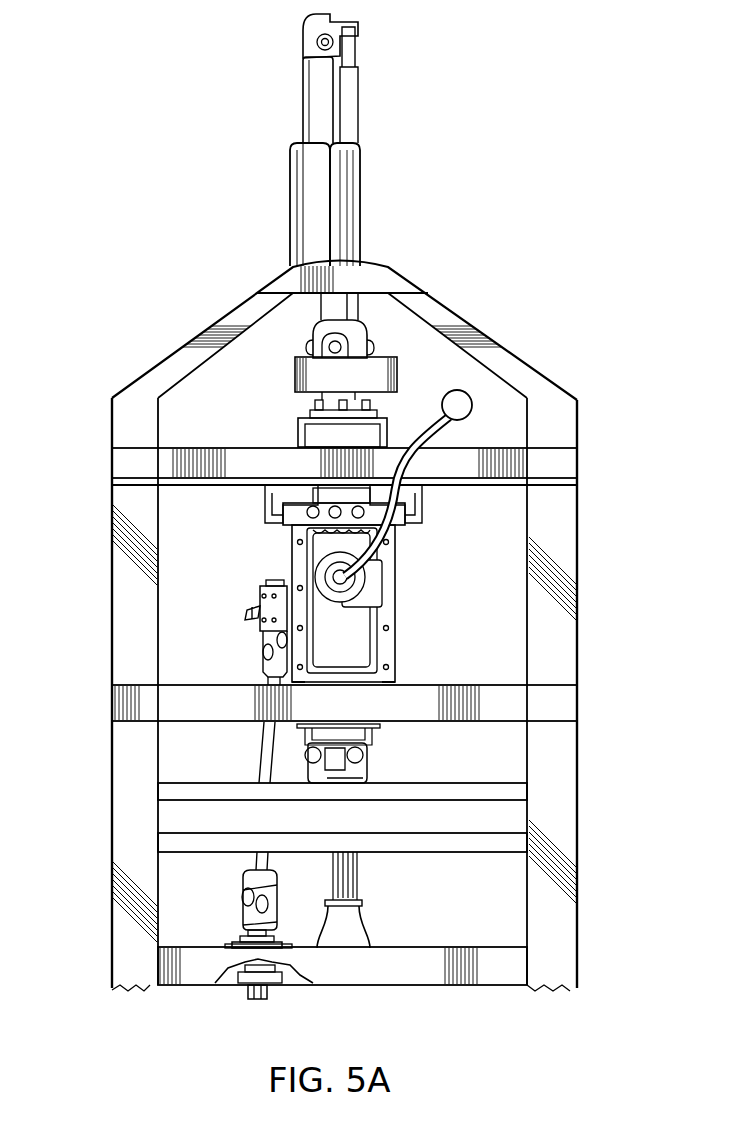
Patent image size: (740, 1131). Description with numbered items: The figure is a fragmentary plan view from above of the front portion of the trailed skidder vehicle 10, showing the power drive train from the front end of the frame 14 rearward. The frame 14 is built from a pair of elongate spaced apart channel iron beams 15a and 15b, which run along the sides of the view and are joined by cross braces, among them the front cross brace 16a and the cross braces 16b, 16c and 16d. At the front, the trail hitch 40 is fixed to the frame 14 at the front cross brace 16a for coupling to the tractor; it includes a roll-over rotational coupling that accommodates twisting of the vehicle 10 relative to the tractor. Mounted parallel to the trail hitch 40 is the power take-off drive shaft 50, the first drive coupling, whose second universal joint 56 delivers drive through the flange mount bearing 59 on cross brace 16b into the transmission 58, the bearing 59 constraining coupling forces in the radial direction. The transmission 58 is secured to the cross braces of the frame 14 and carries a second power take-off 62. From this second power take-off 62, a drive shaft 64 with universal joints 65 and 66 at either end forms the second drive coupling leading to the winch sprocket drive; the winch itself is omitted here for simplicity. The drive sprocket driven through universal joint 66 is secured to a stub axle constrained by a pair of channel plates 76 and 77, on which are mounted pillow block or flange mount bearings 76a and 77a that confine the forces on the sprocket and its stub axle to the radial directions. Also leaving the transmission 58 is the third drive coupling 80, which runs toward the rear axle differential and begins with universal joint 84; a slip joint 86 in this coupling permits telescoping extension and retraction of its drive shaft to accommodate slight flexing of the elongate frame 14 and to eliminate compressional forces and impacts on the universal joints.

The trailed skidder vehicle 10 is at (170, 190).
The frame 14 is at (588, 425).
The channel iron beam 15a is at (580, 558).
The channel iron beam 15b is at (112, 556).
The front cross brace 16a is at (478, 306).
The cross brace 16b is at (172, 447).
The cross brace 16c is at (180, 685).
The cross brace 16d is at (445, 783).
The trail hitch 40 is at (288, 185).
The power take-off drive shaft 50 is at (367, 192).
The second universal joint 56 is at (365, 341).
The transmission 58 is at (395, 573).
The flange mount bearing 59 is at (297, 431).
The second power take-off 62 is at (262, 590).
The drive shaft 64 is at (262, 750).
The universal joint 65 is at (268, 650).
The universal joint 66 is at (277, 881).
The channel plate 76 is at (200, 946).
The flange mount bearing 76a is at (225, 945).
The channel plate 77 is at (192, 986).
The flange mount bearing 77a is at (300, 985).
The third drive coupling 80 is at (380, 934).
The universal joint 84 is at (367, 769).
The slip joint 86 is at (360, 905).